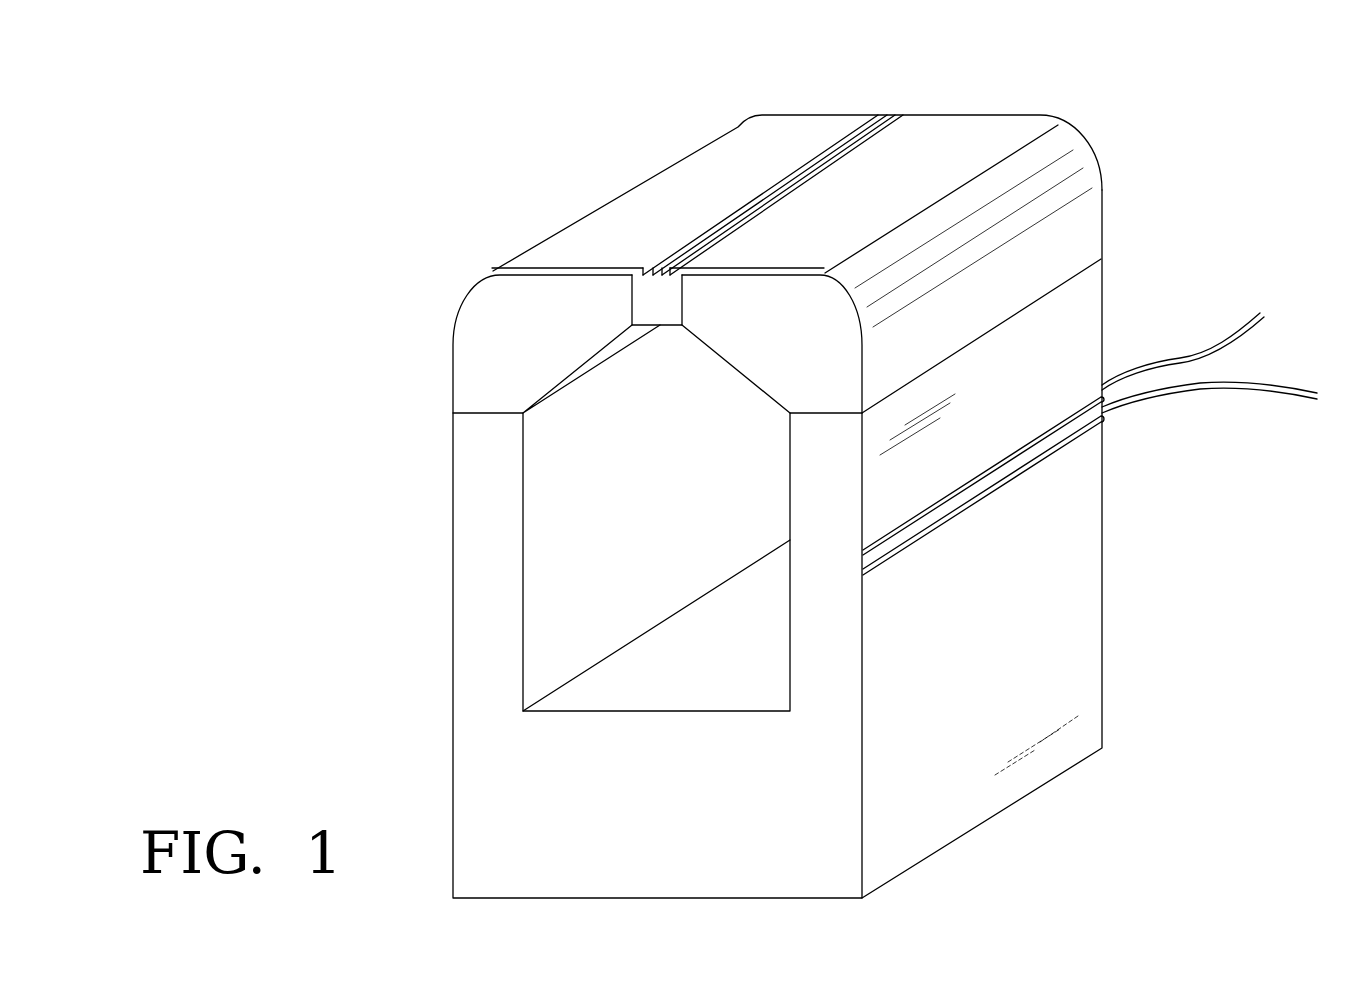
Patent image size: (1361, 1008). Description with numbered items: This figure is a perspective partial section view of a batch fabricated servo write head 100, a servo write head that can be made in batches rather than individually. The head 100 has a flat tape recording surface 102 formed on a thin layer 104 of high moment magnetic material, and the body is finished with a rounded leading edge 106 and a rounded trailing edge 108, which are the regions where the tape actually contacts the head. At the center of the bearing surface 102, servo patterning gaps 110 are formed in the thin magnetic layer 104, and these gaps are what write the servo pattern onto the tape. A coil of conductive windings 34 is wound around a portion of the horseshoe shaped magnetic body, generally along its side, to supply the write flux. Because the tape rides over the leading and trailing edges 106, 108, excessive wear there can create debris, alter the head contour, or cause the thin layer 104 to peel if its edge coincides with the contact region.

The batch fabricated servo write head 100 is at (862, 470).
The flat tape recording surface 102 is at (694, 217).
The thin layer of high moment magnetic material 104 is at (582, 272).
The rounded leading edge 106 is at (486, 284).
The rounded trailing edge 108 is at (843, 288).
The servo patterning gaps 110 is at (903, 115).
The coil of conductive windings 34 is at (1192, 393).